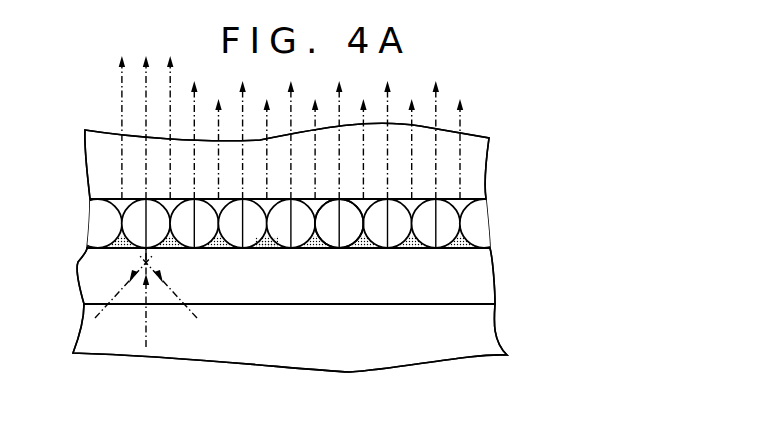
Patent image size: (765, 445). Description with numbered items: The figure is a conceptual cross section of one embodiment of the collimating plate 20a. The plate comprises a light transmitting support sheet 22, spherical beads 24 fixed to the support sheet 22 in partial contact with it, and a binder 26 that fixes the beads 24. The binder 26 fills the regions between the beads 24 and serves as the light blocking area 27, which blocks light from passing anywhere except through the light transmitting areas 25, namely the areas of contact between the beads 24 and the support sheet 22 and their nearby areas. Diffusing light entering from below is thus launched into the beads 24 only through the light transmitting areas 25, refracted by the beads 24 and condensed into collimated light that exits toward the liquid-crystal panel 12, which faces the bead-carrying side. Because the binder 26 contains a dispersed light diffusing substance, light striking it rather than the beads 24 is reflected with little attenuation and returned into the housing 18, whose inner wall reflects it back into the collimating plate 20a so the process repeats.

The collimating plate 20a is at (538, 112).
The liquid-crystal panel 12 is at (470, 177).
The beads 24 is at (472, 222).
The support sheet 22 is at (477, 278).
The housing 18 is at (473, 337).
The light transmitting areas 25 is at (238, 252).
The binder 26 is at (367, 247).
The light blocking area 27 is at (270, 252).